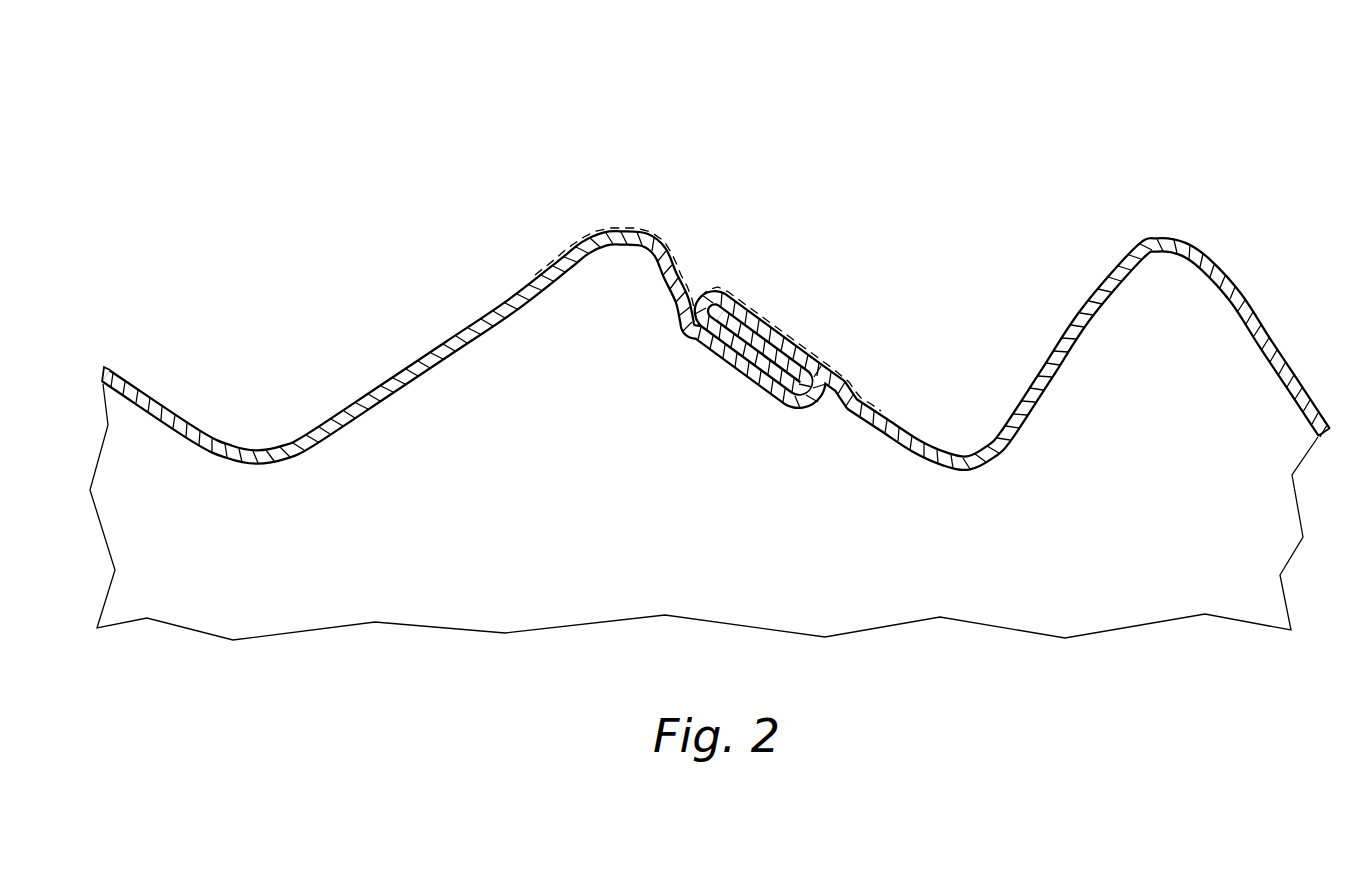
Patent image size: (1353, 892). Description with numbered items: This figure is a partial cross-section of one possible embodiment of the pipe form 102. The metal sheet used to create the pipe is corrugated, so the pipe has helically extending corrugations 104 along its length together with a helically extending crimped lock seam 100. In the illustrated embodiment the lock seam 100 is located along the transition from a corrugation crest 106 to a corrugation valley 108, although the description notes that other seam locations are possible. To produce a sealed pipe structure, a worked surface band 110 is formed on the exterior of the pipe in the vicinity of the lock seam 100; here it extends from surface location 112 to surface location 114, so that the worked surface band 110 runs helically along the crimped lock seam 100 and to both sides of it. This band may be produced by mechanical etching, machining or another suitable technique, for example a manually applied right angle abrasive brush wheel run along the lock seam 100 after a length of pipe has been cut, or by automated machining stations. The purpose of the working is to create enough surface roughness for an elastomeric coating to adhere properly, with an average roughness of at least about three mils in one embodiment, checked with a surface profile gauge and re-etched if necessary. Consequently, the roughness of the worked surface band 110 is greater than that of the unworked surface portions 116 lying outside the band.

The crimped lock seam 100 is at (810, 308).
The pipe form 102 is at (522, 545).
The corrugations 104 is at (627, 212).
The corrugation crest 106 is at (634, 232).
The corrugation valley 108 is at (955, 452).
The worked surface band 110 is at (892, 421).
The surface location 112 is at (538, 272).
The surface location 114 is at (922, 440).
The unworked surface portion 116 is at (1108, 278).